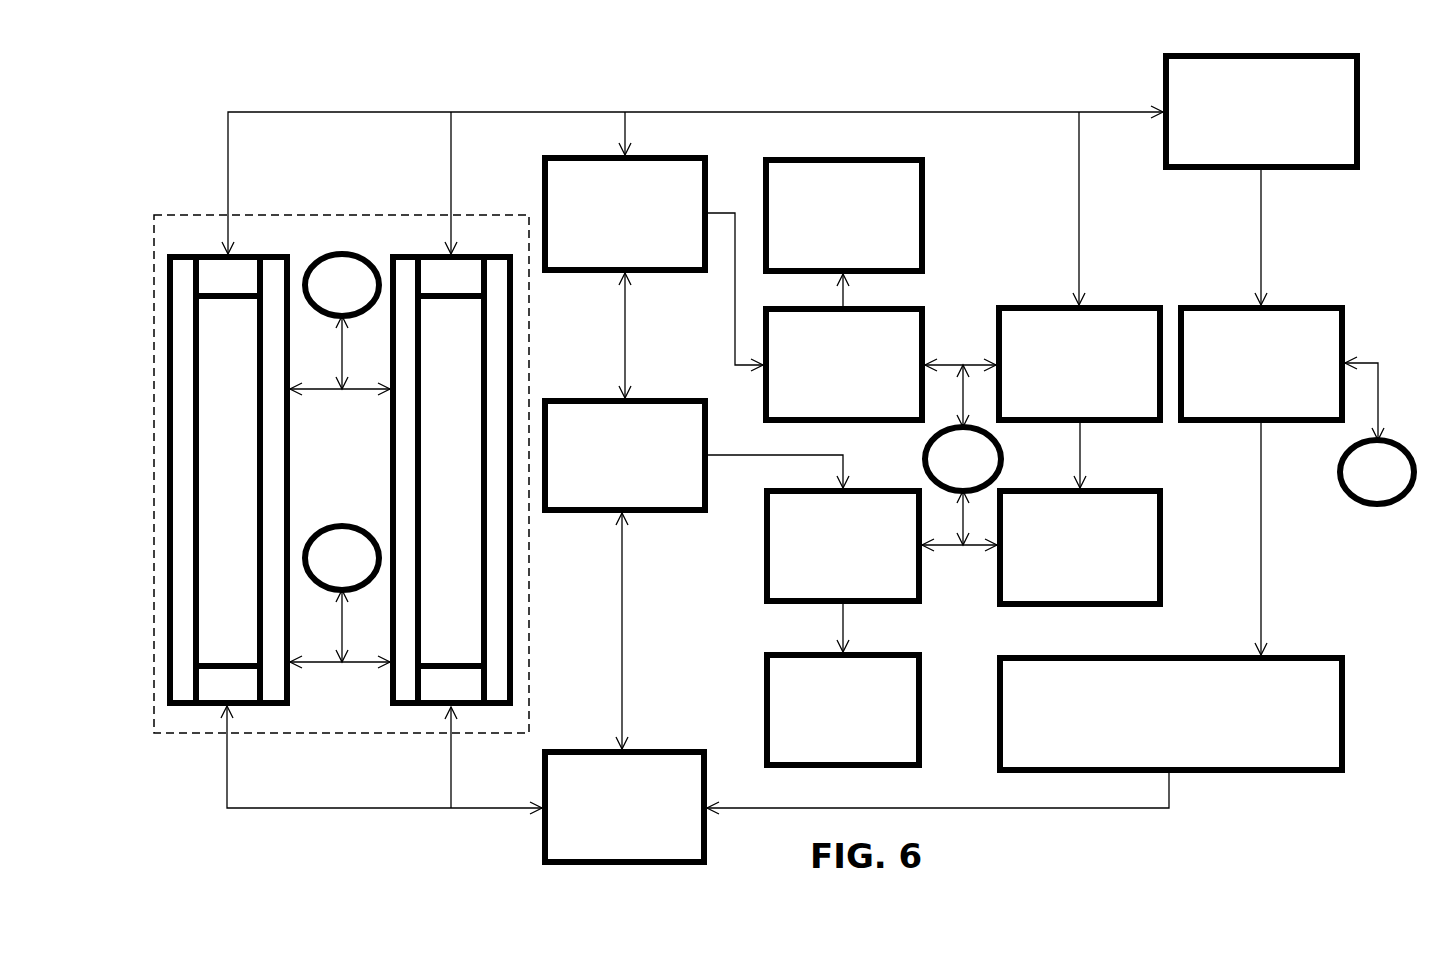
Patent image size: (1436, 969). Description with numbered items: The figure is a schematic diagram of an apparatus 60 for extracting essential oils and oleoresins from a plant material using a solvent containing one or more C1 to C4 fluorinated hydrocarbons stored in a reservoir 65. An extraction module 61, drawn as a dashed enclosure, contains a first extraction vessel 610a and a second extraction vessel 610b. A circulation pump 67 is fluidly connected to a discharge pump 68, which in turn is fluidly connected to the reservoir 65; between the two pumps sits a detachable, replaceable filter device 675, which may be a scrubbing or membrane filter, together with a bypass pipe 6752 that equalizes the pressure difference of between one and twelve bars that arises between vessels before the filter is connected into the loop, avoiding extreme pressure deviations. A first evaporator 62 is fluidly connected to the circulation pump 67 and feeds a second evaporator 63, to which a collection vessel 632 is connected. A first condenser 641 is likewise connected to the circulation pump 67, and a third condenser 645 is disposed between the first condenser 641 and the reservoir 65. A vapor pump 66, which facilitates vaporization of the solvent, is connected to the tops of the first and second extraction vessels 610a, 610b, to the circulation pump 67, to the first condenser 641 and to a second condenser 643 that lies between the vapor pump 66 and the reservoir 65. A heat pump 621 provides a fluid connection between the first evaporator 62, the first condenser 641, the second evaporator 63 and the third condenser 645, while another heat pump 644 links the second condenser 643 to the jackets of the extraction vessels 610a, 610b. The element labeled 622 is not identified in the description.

The apparatus 60 is at (130, 90).
The extraction module 61 is at (205, 217).
The first extraction vessel 610a is at (170, 490).
The second extraction vessel 610b is at (510, 395).
The first evaporator 62 is at (893, 335).
The heat pump 621 is at (980, 468).
The memory 622 is at (900, 213).
The second evaporator 63 is at (795, 530).
The collection vessel 632 is at (815, 711).
The first condenser 641 is at (1125, 310).
The second condenser 643 is at (1305, 340).
The heat pump 644 is at (1377, 490).
The third condenser 645 is at (1137, 568).
The reservoir 65 is at (1203, 743).
The vapor pump 66 is at (1265, 115).
The circulation pump 67 is at (578, 222).
The filter device 675 is at (602, 464).
The bypass pipe 6752 is at (748, 452).
The discharge pump 68 is at (580, 828).